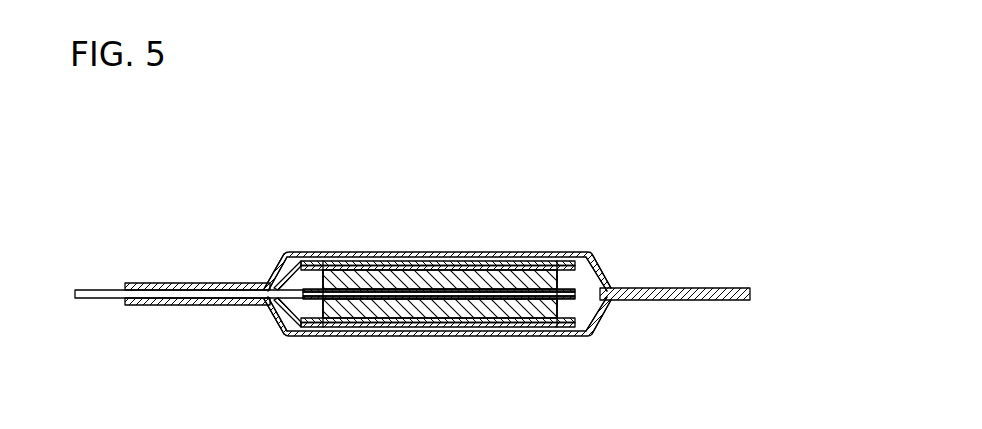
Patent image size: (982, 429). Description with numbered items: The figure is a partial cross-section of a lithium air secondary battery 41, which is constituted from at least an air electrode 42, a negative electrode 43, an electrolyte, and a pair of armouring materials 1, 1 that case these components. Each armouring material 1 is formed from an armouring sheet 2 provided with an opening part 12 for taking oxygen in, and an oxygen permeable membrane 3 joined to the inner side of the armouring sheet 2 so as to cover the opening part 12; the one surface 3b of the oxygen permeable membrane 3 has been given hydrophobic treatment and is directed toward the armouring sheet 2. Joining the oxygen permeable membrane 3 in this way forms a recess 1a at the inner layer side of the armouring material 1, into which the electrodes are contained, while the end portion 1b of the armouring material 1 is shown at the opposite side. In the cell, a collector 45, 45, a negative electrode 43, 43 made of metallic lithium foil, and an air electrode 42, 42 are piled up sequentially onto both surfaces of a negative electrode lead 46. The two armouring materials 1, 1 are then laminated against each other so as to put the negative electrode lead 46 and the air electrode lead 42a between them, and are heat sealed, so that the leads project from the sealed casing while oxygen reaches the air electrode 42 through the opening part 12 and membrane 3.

The lithium air secondary battery 41 is at (583, 212).
The armouring material 1 is at (606, 260).
The recess 1a is at (282, 270).
The end portion of case 1b is at (706, 288).
The armouring sheet 2 is at (756, 289).
The negative electrode lead 46 is at (106, 300).
The opening part 12 is at (329, 263).
The air electrode 42 is at (417, 266).
The air electrode lead 42a is at (291, 262).
The oxygen permeable membrane 3 is at (372, 278).
The one surface of the oxygen permeable membrane 3b is at (546, 263).
The negative electrode 43 is at (463, 290).
The collector 45 is at (500, 293).